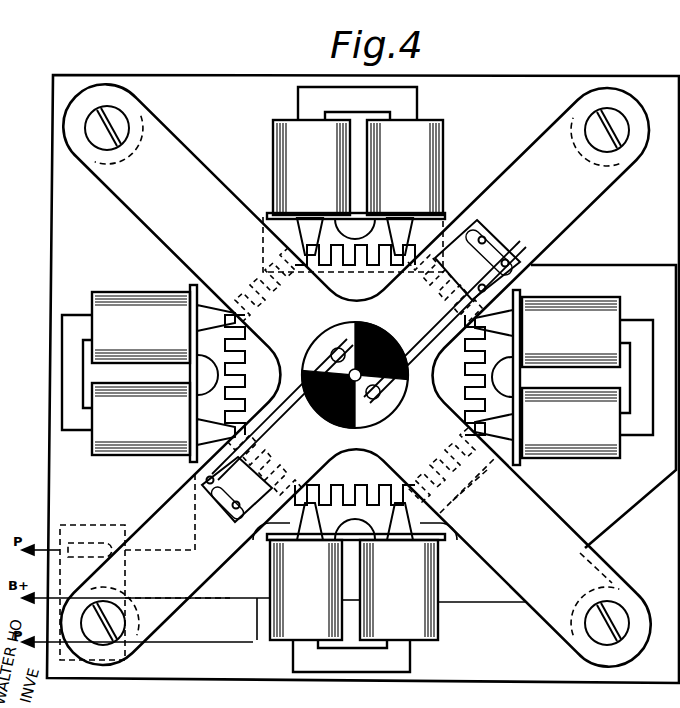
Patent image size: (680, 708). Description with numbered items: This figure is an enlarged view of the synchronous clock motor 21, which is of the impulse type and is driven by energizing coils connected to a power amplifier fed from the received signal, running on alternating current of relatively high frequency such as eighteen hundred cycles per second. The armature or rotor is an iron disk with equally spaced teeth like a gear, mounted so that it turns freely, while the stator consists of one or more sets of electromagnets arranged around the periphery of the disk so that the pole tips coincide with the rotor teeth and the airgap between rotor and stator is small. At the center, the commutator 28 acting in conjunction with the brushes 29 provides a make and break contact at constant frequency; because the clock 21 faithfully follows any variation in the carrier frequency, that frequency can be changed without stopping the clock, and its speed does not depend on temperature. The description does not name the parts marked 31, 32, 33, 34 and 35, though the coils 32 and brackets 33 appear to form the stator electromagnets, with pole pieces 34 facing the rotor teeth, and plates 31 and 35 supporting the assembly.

The toothed ring armature 21 is at (260, 345).
The armature bars 28 is at (432, 330).
The rotor disc 29 is at (335, 340).
The pivot plate 31 is at (442, 218).
The coils 32 is at (275, 140).
The core brackets 33 is at (418, 99).
The pole pieces 34 is at (496, 375).
The base plate 35 is at (535, 530).